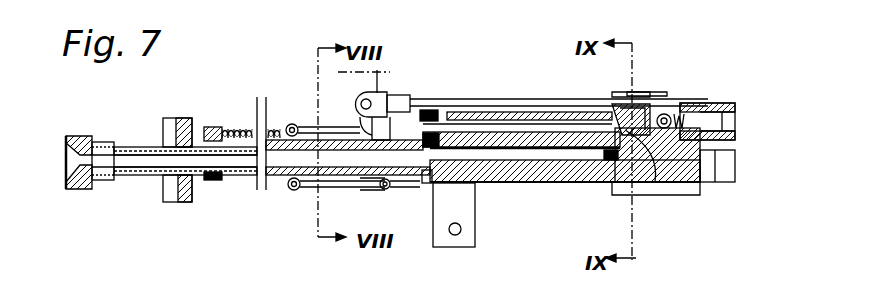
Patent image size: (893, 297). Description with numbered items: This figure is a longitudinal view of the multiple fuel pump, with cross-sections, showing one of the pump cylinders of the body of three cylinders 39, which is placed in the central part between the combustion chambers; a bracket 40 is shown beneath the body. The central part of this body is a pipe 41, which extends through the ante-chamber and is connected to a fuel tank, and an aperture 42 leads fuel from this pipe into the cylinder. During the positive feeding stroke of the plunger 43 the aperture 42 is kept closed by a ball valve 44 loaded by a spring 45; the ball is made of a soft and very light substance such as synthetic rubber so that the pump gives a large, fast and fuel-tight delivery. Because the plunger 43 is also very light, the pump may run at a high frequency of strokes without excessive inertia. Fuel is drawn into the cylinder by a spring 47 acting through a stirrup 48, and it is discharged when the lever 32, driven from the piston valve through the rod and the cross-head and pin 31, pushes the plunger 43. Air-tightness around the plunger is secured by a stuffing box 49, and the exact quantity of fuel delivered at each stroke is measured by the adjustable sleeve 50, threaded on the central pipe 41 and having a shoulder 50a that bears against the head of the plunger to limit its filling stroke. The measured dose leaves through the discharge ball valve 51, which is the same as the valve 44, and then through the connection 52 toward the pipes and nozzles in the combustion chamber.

The cross-heads and pins 31 is at (405, 100).
The lever 32 is at (362, 85).
The body of three cylinders 39 is at (503, 172).
The bracket 40 is at (440, 207).
The pipe 41 is at (147, 146).
The aperture 42 is at (622, 178).
The plunger 43 is at (505, 125).
The ball valve 44 is at (667, 190).
The spring 45 is at (625, 110).
The spring 47 is at (243, 122).
The stirrup 48 is at (304, 192).
The stuffing box 49 is at (435, 110).
The adjustable sleeve 50 is at (176, 120).
The shoulder 50a is at (373, 180).
The discharge ball valve 51 is at (666, 114).
The connection 52 is at (722, 102).